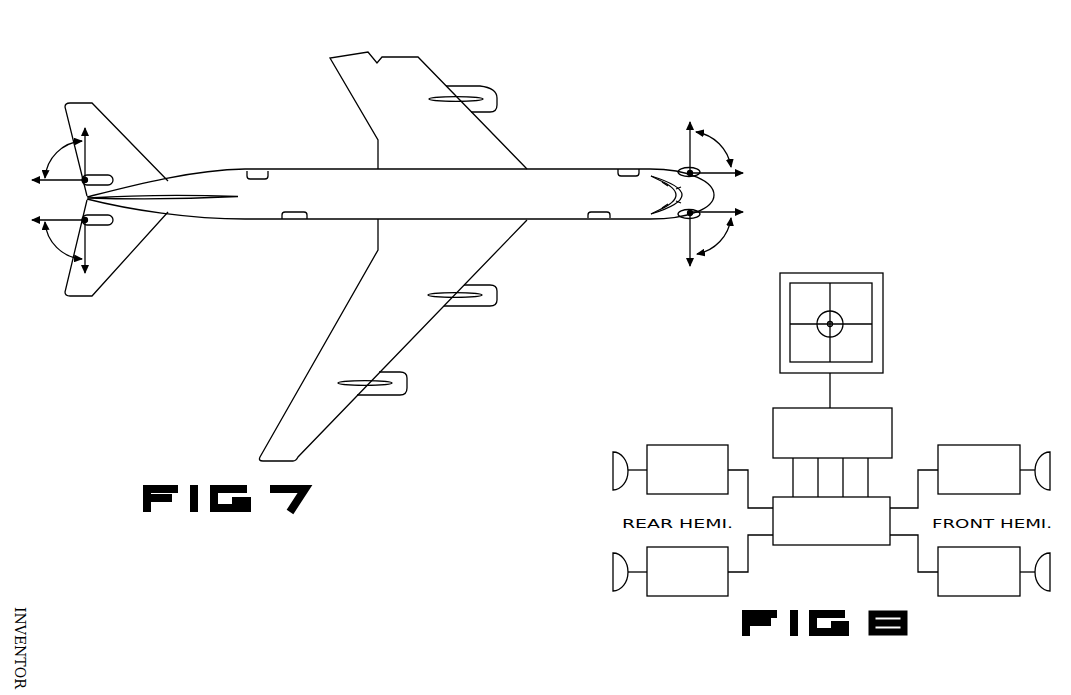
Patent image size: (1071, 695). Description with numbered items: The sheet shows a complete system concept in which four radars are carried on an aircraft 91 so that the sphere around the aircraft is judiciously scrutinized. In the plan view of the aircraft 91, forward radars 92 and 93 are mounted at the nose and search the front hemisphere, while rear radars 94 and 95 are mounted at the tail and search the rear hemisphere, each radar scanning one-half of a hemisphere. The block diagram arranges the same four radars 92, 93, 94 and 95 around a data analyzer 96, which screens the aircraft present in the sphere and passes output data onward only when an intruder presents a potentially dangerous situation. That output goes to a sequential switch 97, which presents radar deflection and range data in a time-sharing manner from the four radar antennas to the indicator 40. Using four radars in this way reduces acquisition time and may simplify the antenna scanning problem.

In FIG. 7, the aircraft 91 is at (321, 169).
In FIG. 7, the forward radar 92 is at (733, 166).
In FIG. 8, the forward radar 92 is at (966, 445).
In FIG. 7, the forward radar 93 is at (717, 253).
In FIG. 8, the forward radar 93 is at (972, 596).
In FIG. 7, the rear radar 94 is at (46, 175).
In FIG. 8, the rear radar 94 is at (677, 445).
In FIG. 7, the rear radar 95 is at (46, 226).
In FIG. 8, the rear radar 95 is at (668, 596).
In FIG. 8, the indicator 40 is at (884, 338).
In FIG. 8, the data analyzer 96 is at (835, 546).
In FIG. 8, the sequential switch 97 is at (864, 408).